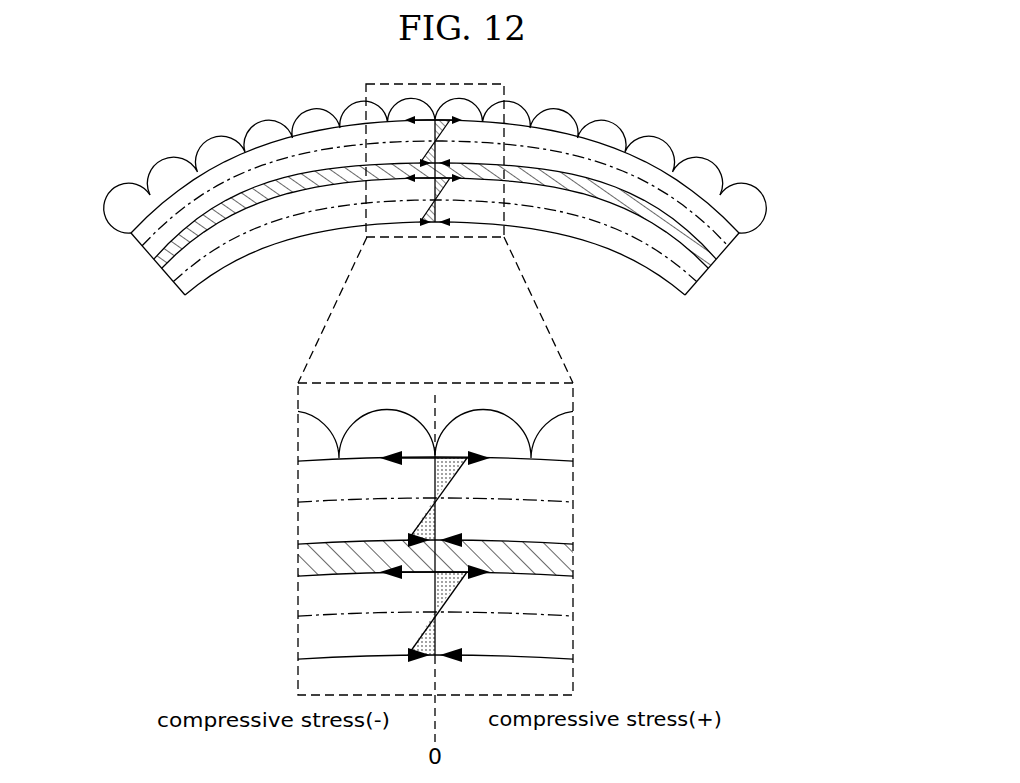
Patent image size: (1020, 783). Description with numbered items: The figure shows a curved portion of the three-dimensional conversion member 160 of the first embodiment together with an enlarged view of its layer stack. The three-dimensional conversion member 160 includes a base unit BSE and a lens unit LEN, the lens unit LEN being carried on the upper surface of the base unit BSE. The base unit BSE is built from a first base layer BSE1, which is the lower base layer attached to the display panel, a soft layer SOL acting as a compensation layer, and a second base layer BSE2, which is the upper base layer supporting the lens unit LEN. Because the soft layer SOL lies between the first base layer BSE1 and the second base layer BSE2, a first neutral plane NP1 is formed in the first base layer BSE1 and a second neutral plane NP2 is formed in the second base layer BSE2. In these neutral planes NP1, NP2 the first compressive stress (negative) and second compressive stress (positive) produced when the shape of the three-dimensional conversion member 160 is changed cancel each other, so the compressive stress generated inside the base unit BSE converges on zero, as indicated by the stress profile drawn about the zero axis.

The 3D conversion member 160 is at (114, 362).
The lens unit LEN is at (746, 208).
The base unit BSE is at (522, 389).
The second base layer BSE2 is at (730, 246).
The soft layer SOL is at (715, 260).
The first base layer BSE1 is at (700, 286).
The second neutral plane NP2 is at (128, 247).
The first neutral plane NP1 is at (160, 286).